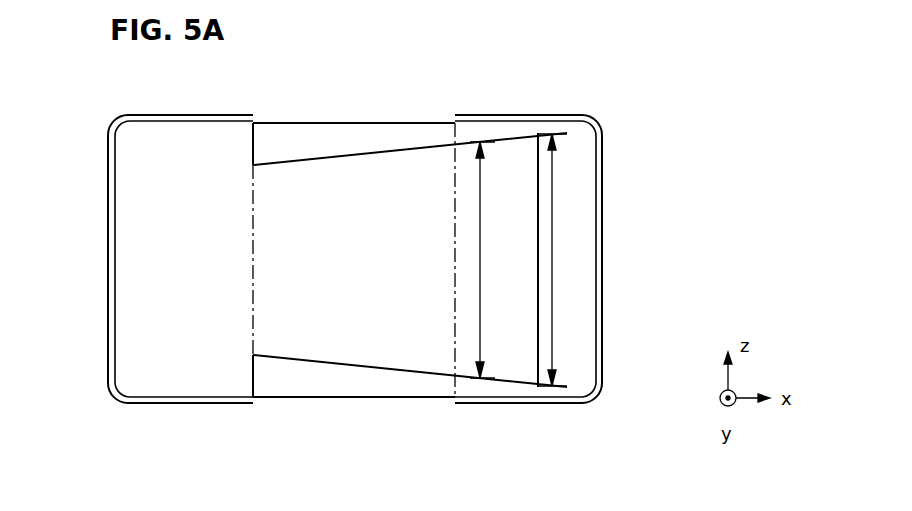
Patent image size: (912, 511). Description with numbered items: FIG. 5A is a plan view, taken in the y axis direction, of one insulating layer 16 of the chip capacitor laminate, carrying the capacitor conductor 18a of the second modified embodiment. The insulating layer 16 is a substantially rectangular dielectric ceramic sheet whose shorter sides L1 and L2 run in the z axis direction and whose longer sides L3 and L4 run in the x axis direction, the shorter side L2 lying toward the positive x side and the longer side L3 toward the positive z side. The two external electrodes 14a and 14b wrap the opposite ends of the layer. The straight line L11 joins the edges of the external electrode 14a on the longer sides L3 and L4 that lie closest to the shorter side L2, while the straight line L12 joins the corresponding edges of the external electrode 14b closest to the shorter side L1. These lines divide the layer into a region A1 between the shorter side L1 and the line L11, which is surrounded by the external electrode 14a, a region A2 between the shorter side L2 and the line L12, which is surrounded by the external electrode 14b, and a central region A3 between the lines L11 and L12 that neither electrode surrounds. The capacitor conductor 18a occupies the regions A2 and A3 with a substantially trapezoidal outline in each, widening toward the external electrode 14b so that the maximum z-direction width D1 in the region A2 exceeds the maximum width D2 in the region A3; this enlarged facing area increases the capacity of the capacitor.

The external electrode 14a is at (108, 275).
The external electrode 14b is at (600, 282).
The insulating layer 16 is at (583, 358).
The capacitor conductor 18a is at (388, 147).
The region A1 is at (150, 150).
The region A2 is at (570, 145).
The region A3 is at (347, 138).
The shorter side L1 is at (112, 349).
The shorter side L2 is at (596, 320).
The longer side L3 is at (316, 122).
The longer side L4 is at (330, 404).
The straight line L11 is at (253, 277).
The straight line L12 is at (455, 283).
The width D1 is at (564, 260).
The width D2 is at (495, 260).